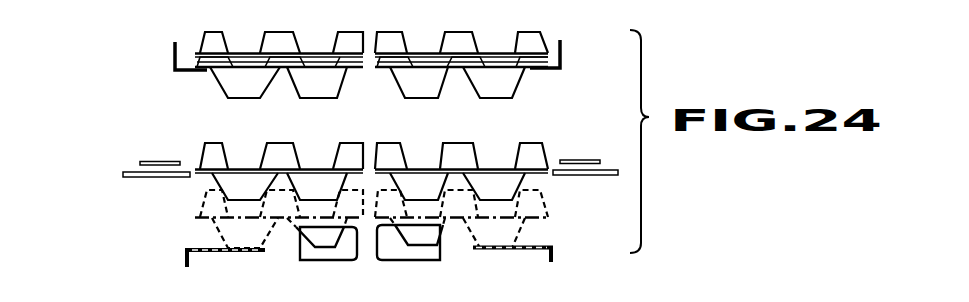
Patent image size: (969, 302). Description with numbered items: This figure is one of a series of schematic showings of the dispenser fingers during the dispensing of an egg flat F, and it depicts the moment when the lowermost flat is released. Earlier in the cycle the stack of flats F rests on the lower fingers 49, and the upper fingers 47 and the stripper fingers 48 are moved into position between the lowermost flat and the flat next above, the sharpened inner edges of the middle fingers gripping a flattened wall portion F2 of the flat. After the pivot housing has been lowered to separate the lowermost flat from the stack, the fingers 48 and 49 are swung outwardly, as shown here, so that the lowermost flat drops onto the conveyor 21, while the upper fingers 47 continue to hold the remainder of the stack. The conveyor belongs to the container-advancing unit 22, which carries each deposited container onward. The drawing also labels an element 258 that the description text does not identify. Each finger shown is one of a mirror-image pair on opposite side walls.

The upper finger 47 is at (174, 58).
The flattened wall portion F2 is at (200, 50).
The flat F is at (320, 77).
The stripper finger 48 is at (166, 159).
The lower finger 49 is at (156, 178).
The container-advancing unit 22 is at (183, 251).
The conveyor 21 is at (327, 258).
The block 258 is at (393, 248).